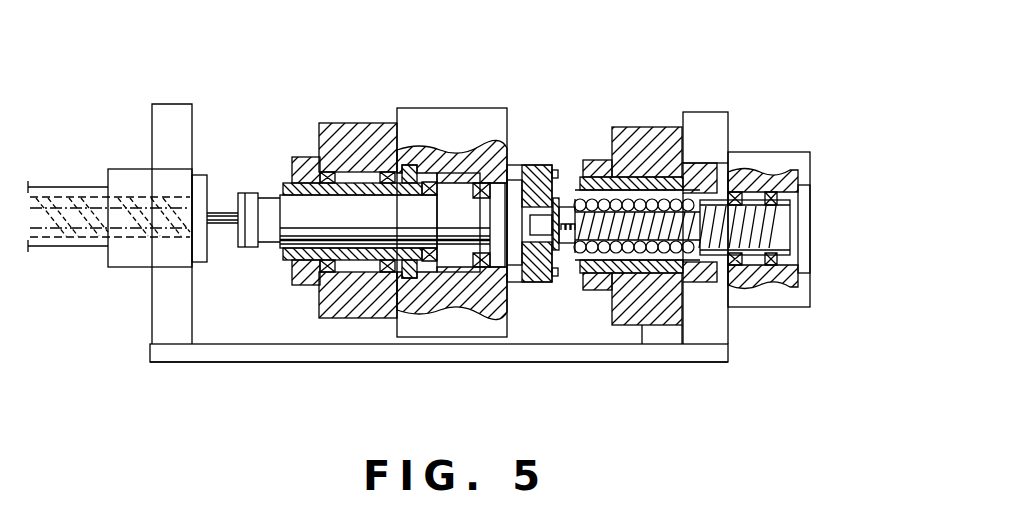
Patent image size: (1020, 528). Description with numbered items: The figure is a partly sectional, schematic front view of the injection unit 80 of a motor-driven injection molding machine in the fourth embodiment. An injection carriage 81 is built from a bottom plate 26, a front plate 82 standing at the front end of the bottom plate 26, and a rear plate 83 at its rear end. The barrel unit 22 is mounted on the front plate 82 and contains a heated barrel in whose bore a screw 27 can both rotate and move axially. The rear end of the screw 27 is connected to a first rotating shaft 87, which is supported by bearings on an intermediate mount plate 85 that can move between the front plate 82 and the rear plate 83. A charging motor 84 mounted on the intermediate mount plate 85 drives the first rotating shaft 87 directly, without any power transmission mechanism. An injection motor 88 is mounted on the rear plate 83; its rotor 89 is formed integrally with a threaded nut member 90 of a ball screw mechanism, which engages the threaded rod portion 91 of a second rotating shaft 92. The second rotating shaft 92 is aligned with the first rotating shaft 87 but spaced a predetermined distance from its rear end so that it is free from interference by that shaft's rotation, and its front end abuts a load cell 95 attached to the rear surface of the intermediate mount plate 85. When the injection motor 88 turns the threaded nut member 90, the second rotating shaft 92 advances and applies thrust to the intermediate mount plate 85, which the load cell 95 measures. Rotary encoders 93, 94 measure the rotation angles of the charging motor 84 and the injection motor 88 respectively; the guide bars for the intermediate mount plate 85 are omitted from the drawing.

The barrel unit 22 is at (60, 187).
The bottom plate 26 is at (385, 363).
The screw 27 is at (70, 230).
The injection unit 80 is at (175, 99).
The injection carriage 81 is at (185, 362).
The front plate 82 is at (160, 310).
The rear plate 83 is at (700, 112).
The charging motor 84 is at (325, 307).
The intermediate mount plate 85 is at (438, 108).
The first rotating shaft 87 is at (352, 205).
The injection motor 88 is at (640, 363).
The rotor 89 is at (633, 180).
The threaded nut member 90 is at (572, 272).
The threaded rod portion 91 is at (747, 223).
The second rotating shaft 92 is at (753, 277).
The rotary encoder 93 is at (300, 157).
The rotary encoder 94 is at (590, 160).
The load cell 95 is at (530, 165).